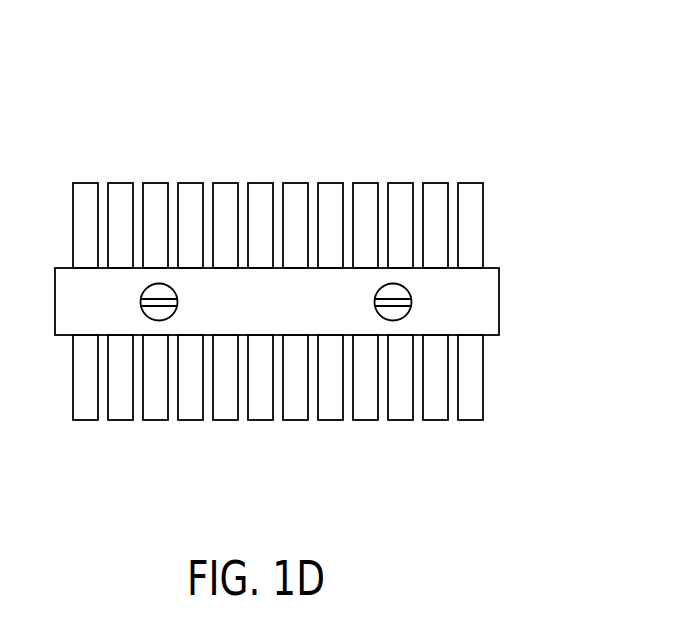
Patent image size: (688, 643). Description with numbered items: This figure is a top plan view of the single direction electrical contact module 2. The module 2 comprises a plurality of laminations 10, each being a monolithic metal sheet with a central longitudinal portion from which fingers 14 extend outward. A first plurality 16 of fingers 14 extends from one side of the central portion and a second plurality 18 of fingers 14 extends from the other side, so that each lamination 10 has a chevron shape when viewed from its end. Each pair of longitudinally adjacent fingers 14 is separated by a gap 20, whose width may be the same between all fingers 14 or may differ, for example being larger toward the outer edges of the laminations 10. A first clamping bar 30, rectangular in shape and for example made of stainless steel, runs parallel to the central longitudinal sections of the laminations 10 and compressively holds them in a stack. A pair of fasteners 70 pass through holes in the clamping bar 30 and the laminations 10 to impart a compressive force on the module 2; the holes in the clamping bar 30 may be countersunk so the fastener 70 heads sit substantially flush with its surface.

The single direction electrical contact module 2 is at (301, 284).
The lamination 10 is at (301, 319).
The finger 14 is at (152, 193).
The first plurality of fingers 16 is at (437, 193).
The second plurality of fingers 18 is at (432, 402).
The gap 20 is at (276, 192).
The first clamping bar 30 is at (483, 297).
The fastener 70 is at (394, 312).